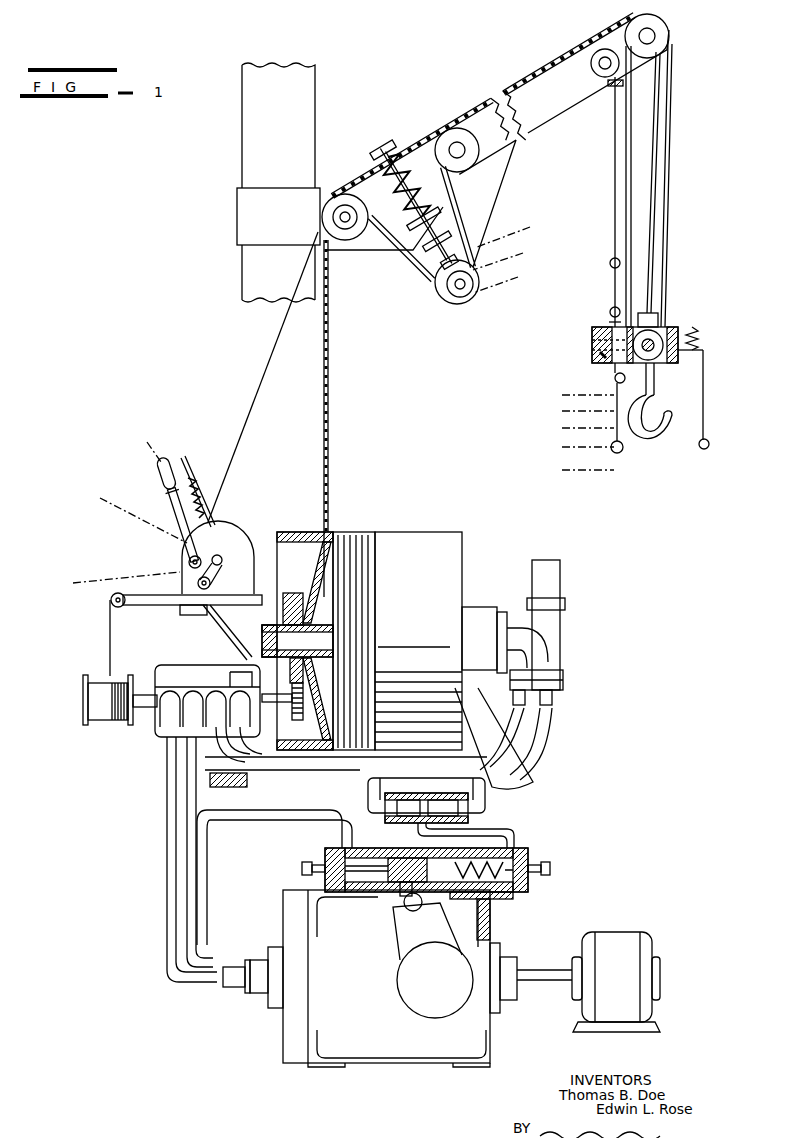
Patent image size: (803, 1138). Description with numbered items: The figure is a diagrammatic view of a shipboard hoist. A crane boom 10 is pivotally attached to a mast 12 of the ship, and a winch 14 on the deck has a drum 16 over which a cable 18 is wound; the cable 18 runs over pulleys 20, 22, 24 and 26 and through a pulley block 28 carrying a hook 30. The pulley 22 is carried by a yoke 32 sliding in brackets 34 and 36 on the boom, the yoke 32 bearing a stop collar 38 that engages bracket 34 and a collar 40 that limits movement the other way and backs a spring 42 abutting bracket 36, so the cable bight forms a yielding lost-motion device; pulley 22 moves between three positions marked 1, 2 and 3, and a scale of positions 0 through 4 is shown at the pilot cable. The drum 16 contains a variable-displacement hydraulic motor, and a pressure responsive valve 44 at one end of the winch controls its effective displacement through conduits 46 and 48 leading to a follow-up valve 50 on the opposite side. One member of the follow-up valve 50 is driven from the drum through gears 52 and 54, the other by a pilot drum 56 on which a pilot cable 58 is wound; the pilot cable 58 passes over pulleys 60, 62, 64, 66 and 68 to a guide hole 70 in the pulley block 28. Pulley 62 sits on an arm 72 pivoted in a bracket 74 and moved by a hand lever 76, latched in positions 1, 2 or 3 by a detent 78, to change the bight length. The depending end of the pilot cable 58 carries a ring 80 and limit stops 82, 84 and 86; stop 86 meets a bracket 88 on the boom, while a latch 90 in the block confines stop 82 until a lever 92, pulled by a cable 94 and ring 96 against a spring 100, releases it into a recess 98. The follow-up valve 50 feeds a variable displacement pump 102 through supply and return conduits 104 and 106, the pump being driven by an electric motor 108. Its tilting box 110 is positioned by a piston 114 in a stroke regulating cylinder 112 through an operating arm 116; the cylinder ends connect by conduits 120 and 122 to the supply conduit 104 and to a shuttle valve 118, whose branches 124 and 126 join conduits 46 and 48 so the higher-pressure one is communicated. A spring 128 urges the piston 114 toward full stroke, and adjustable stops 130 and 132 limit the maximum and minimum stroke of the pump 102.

The scale position 0 is at (581, 395).
The position 1 is at (376, 337).
The position 2 is at (347, 390).
The position 3 is at (336, 428).
The scale position 4 is at (581, 470).
The crane boom 10 is at (570, 53).
The mast 12 is at (258, 137).
The winch 14 is at (460, 590).
The drum 16 is at (420, 542).
The cable 18 is at (331, 434).
The pulley 20 is at (347, 238).
The pulley 22 is at (455, 303).
The pulley 24 is at (452, 130).
The pulley 26 is at (671, 33).
The pulley block 28 is at (670, 326).
The hook 30 is at (648, 428).
The yoke 32 is at (428, 260).
The bracket 34 is at (449, 232).
The bracket 36 is at (404, 158).
The stop collar 38 is at (446, 268).
The collar 40 is at (439, 209).
The spring 42 is at (440, 183).
The pressure responsive valve 44 is at (560, 635).
The conduit 46 is at (552, 727).
The conduit 48 is at (527, 737).
The follow-up valve 50 is at (160, 727).
The gear 52 is at (290, 713).
The gear 54 is at (292, 596).
The pilot drum 56 is at (96, 703).
The pilot cable 58 is at (614, 218).
The pulley 60 is at (110, 599).
The pulley 62 is at (211, 583).
The pulley 64 is at (188, 560).
The pulley 66 is at (343, 194).
The pulley 68 is at (600, 50).
The guide hole 70 is at (607, 326).
The arm 72 is at (223, 566).
The bracket 74 is at (223, 527).
The hand lever 76 is at (170, 478).
The detent 78 is at (212, 520).
The ring 80 is at (621, 451).
The limit stop 82 is at (625, 379).
The limit stop 84 is at (611, 309).
The limit stop 86 is at (611, 261).
The bracket 88 is at (612, 86).
The latch 90 is at (606, 358).
The lever 92 is at (704, 349).
The cable 94 is at (705, 405).
The ring 96 is at (710, 444).
The recess 98 is at (592, 338).
The spring 100 is at (700, 328).
The variable displacement pump 102 is at (375, 1050).
The supply conduit 104 is at (195, 893).
The return conduit 106 is at (165, 862).
The electric motor 108 is at (625, 940).
The tilting box 110 is at (433, 960).
The stroke regulating cylinder 112 is at (380, 850).
The piston 114 is at (435, 866).
The operating arm 116 is at (404, 901).
The shuttle valve 118 is at (470, 820).
The conduit 120 is at (252, 818).
The conduit 122 is at (516, 836).
The branch 124 is at (370, 793).
The branch 126 is at (486, 795).
The spring 128 is at (515, 898).
The adjustable stop 130 is at (310, 861).
The adjustable stop 132 is at (552, 867).